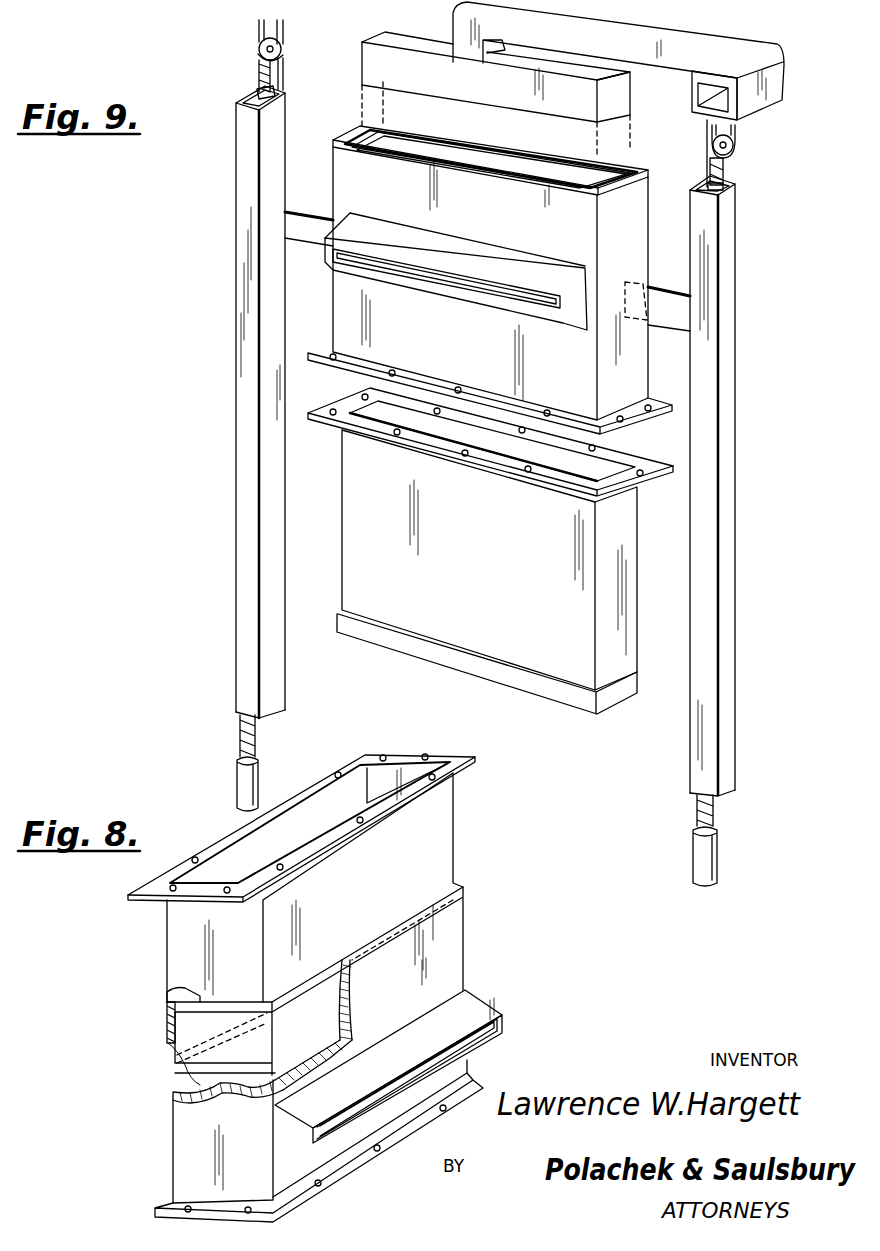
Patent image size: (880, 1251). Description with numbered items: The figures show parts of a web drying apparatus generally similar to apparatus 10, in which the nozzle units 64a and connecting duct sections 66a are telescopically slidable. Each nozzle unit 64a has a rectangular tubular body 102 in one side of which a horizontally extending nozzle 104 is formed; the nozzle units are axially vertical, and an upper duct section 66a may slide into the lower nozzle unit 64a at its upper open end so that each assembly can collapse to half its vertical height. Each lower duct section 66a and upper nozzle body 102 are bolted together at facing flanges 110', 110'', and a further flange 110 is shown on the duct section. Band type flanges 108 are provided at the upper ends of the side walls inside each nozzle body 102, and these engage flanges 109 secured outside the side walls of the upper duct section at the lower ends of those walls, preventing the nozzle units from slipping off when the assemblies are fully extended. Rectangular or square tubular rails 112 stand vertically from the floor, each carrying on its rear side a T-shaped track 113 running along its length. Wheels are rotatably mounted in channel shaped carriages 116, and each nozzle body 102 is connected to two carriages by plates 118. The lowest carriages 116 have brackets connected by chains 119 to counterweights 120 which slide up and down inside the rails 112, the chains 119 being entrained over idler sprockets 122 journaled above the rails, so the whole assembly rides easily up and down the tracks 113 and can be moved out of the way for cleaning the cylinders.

In FIG. 9, the web drying apparatus 10 is at (223, 173).
In FIG. 9, the nozzle unit 64a is at (662, 362).
In FIG. 8, the nozzle unit 64a is at (468, 965).
In FIG. 8, the duct section 66a is at (435, 847).
In FIG. 9, the rectangular tubular body 102 is at (350, 325).
In FIG. 8, the rectangular tubular body 102 is at (450, 940).
In FIG. 9, the nozzle 104 is at (355, 277).
In FIG. 8, the nozzle 104 is at (462, 1013).
In FIG. 9, the band type flange 108 is at (358, 137).
In FIG. 8, the band type flange 108 is at (172, 1000).
In FIG. 9, the flange 109 is at (527, 680).
In FIG. 8, the flange 109 is at (180, 1076).
In FIG. 8, the flange 110 is at (337, 910).
In FIG. 9, the flange 110' is at (480, 442).
In FIG. 9, the flange 110'' is at (480, 393).
In FIG. 8, the flange 110'' is at (319, 1147).
In FIG. 9, the tubular rail 112 is at (250, 463).
In FIG. 9, the T-shaped track 113 is at (278, 88).
In FIG. 9, the carriage 116 is at (287, 212).
In FIG. 9, the plate 118 is at (665, 300).
In FIG. 9, the chain 119 is at (284, 68).
In FIG. 9, the counterweight 120 is at (720, 853).
In FIG. 9, the idler sprocket 122 is at (262, 56).